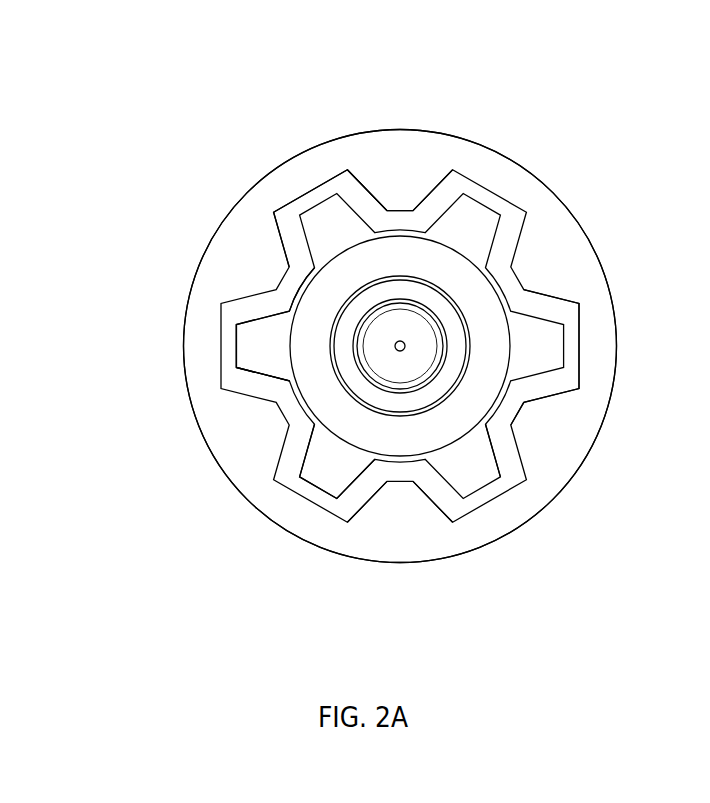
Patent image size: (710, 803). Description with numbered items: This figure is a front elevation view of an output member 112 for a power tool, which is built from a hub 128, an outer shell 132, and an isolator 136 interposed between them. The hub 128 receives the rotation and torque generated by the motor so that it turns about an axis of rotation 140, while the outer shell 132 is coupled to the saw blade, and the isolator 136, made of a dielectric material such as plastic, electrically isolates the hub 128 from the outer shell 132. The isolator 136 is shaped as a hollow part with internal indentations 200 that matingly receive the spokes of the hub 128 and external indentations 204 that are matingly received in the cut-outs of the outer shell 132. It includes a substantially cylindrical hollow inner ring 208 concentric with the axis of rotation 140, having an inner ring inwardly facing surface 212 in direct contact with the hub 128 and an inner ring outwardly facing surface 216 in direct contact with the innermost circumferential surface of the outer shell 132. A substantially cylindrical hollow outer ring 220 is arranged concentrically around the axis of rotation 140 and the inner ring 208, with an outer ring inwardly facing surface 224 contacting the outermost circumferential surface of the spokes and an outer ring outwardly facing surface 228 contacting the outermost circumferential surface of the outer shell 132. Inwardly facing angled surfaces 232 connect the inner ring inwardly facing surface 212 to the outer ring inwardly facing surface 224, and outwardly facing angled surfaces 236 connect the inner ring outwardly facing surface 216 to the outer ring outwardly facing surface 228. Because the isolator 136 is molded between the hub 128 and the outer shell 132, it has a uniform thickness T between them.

The output member 112 is at (299, 98).
The hub 128 is at (470, 230).
The outer shell 132 is at (575, 263).
The isolator 136 is at (575, 330).
The axis of rotation 140 is at (405, 347).
The internal indentations 200 is at (324, 206).
The external indentations 204 is at (403, 200).
The inner ring 208 is at (293, 283).
The inner ring inwardly facing surface 212 is at (298, 303).
The inner ring outwardly facing surface 216 is at (281, 268).
The outer ring 220 is at (234, 370).
The outer ring inwardly facing surface 224 is at (238, 354).
The outer ring outwardly facing surface 228 is at (232, 362).
The inwardly facing angled surfaces 232 is at (307, 455).
The outwardly facing angled surfaces 236 is at (434, 503).
The uniform thickness T is at (462, 467).